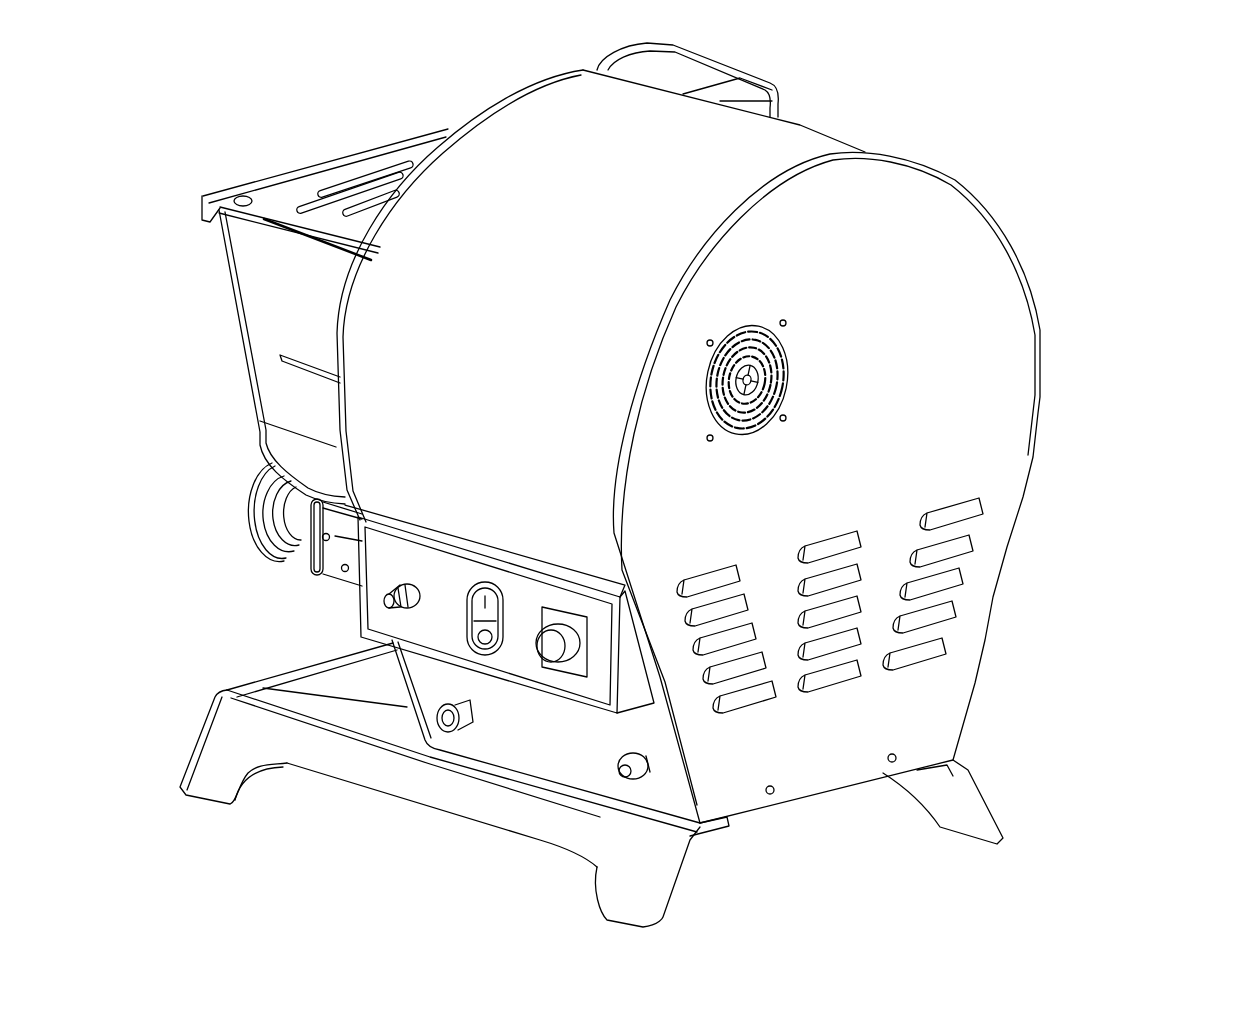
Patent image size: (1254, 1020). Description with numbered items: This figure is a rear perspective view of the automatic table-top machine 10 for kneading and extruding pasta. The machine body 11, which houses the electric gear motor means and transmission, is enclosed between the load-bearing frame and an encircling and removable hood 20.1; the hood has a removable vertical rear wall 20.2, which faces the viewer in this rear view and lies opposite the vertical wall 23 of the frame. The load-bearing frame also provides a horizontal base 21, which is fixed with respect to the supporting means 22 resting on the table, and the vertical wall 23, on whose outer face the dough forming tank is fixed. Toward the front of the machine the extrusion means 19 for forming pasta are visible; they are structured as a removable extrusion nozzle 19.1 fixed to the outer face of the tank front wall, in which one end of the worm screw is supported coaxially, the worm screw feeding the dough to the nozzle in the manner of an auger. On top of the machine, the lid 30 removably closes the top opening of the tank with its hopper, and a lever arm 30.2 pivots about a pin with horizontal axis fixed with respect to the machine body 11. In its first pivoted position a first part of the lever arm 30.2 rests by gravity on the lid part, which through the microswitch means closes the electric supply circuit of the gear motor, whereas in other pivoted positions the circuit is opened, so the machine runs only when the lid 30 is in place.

The automatic table-top machine 10 is at (207, 155).
The machine body 11 is at (1092, 262).
The extrusion means 19 is at (244, 519).
The removable extrusion nozzle 19.1 is at (313, 565).
The encircling and removable hood 20.1 is at (510, 372).
The removable vertical rear wall 20.2 is at (882, 368).
The horizontal base 21 is at (565, 787).
The supporting means 22 is at (460, 802).
The vertical wall 23 is at (407, 705).
The lid 30 is at (372, 166).
The lever arm 30.2 is at (717, 73).